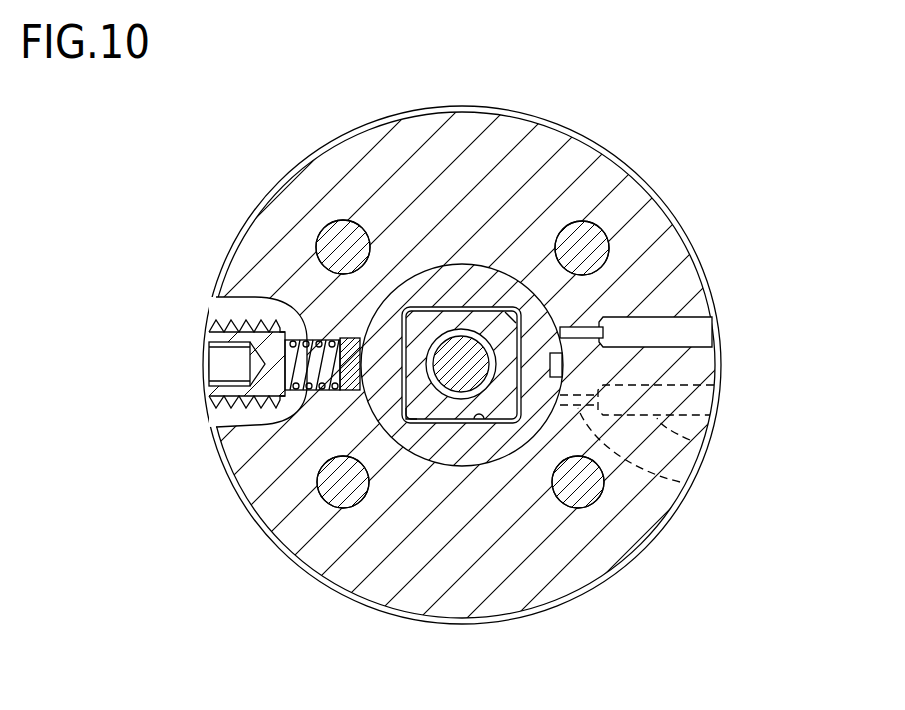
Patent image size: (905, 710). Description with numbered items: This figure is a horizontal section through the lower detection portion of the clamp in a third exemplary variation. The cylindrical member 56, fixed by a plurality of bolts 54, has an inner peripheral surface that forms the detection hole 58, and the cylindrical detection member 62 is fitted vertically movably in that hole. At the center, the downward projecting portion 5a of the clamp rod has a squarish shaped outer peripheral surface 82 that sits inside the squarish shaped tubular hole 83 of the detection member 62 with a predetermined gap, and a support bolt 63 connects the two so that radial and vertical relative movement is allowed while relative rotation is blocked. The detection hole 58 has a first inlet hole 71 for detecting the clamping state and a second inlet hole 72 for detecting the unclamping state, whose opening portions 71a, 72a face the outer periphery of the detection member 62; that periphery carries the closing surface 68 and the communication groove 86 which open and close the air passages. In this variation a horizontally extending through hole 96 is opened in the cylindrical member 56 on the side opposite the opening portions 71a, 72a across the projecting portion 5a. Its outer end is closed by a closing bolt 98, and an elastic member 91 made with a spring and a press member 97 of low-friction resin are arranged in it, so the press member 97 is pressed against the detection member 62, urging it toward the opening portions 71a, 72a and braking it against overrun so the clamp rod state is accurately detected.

The cylindrical member 56 is at (596, 140).
The detection member 62 is at (514, 449).
The detection hole 58 is at (412, 288).
The squarish shaped outer peripheral surface 82 is at (414, 424).
The projecting portion 5a is at (409, 420).
The squarish shaped tubular hole 83 is at (480, 422).
The support bolt 63 is at (463, 350).
The bolts 54 is at (321, 236).
The elastic member 91 is at (270, 402).
The closing bolt 98 is at (208, 344).
The press member 97 is at (335, 395).
The through hole 96 is at (292, 335).
The second inlet hole 72 is at (657, 314).
The opening portion 72a is at (577, 326).
The communication groove 86 is at (562, 356).
The closing surface 68 is at (562, 382).
The first inlet hole 71 is at (690, 440).
The opening portion 71a is at (680, 482).